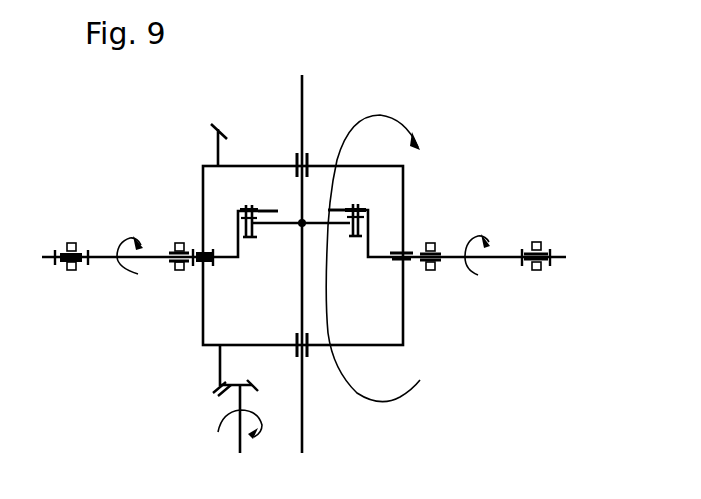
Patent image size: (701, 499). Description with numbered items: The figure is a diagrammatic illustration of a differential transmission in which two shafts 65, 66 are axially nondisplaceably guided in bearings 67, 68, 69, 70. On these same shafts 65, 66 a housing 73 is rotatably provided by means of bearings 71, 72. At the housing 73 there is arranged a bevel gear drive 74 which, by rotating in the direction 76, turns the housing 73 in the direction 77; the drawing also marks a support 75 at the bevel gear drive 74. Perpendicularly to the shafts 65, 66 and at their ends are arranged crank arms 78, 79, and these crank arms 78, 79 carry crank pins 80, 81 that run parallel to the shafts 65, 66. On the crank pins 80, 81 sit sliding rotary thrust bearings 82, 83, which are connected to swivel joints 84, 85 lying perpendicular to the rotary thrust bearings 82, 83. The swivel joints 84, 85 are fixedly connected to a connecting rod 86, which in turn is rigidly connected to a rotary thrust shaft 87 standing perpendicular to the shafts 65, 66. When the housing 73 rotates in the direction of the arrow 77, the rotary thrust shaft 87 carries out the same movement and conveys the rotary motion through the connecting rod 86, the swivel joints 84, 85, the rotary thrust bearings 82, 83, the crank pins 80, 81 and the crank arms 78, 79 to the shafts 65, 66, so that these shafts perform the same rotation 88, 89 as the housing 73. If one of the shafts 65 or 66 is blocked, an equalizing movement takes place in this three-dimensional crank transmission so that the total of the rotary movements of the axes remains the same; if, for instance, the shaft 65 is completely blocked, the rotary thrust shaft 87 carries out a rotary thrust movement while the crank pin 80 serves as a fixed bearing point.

The shaft 65 is at (45, 260).
The shaft 66 is at (563, 259).
The bearing 67 is at (70, 241).
The bearing 68 is at (178, 272).
The bearing 69 is at (430, 272).
The bearing 70 is at (536, 241).
The bearing 71 is at (198, 249).
The bearing 72 is at (405, 251).
The housing 73 is at (203, 328).
The bevel gear drive 74 is at (212, 387).
The fixed support 75 is at (248, 393).
The direction of rotation 76 is at (218, 431).
The direction of rotation 77 is at (373, 113).
The crank arm 78 is at (238, 232).
The crank arm 79 is at (368, 250).
The crank pin 80 is at (270, 208).
The crank pin 81 is at (336, 209).
The sliding rotary thrust bearing 82 is at (248, 204).
The sliding rotary thrust bearing 83 is at (358, 203).
The swivel joint 84 is at (263, 236).
The swivel joint 85 is at (349, 236).
The connecting rod 86 is at (313, 218).
The rotary thrust shaft 87 is at (302, 420).
The rotation 88 is at (127, 236).
The rotation 89 is at (476, 232).